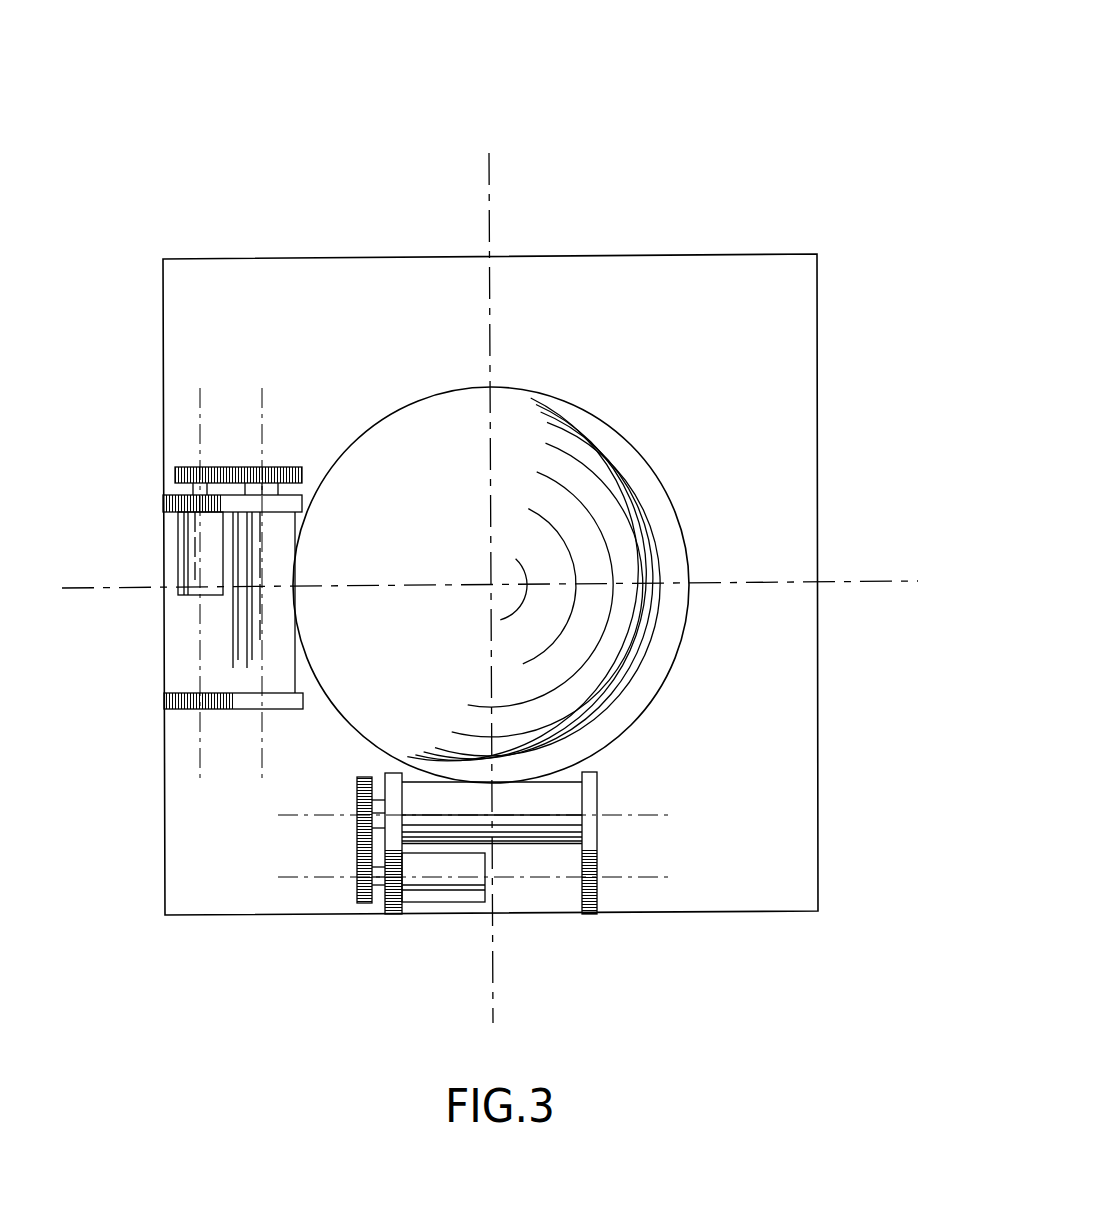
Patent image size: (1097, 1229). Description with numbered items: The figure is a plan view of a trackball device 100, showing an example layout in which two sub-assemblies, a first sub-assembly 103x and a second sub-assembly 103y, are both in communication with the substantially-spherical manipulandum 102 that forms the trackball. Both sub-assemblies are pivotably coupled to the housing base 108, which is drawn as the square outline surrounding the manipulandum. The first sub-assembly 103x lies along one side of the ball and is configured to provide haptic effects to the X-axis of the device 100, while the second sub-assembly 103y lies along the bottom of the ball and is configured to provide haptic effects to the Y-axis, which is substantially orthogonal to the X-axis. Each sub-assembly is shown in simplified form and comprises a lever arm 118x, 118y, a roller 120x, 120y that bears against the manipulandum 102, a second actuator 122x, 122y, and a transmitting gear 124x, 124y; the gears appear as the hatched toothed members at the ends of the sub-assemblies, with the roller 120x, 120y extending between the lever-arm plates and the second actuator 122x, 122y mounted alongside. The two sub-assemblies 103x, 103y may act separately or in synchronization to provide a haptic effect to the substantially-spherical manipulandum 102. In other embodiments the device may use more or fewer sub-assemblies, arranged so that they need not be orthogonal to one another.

The device 100 is at (645, 72).
The housing base 108 is at (757, 290).
The substantially-spherical manipulandum 102 is at (617, 428).
The first sub-assembly 103x is at (292, 424).
The transmitting gear 124x is at (233, 473).
The roller 120x is at (272, 664).
The second actuator 122x is at (207, 542).
The lever arm 118x is at (297, 700).
The second sub-assembly 103y is at (648, 762).
The transmitting gear 124y is at (363, 828).
The roller 120y is at (538, 803).
The second actuator 122y is at (427, 870).
The lever arm 118y is at (588, 830).